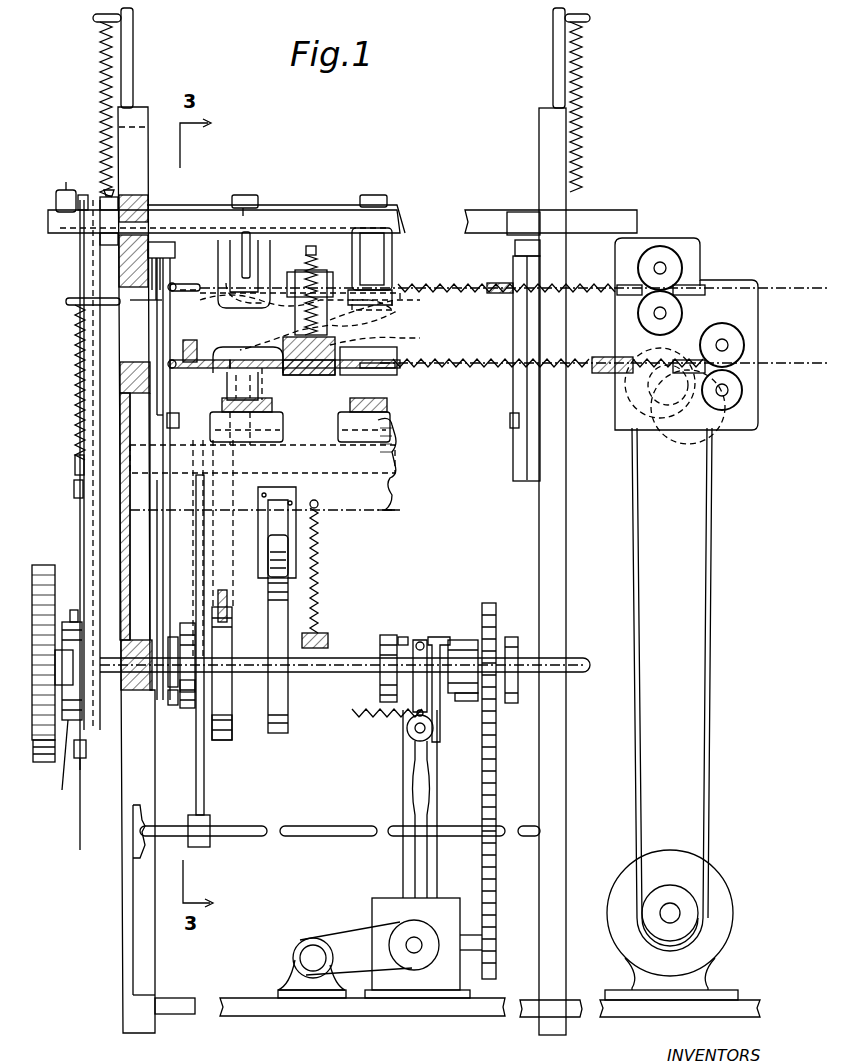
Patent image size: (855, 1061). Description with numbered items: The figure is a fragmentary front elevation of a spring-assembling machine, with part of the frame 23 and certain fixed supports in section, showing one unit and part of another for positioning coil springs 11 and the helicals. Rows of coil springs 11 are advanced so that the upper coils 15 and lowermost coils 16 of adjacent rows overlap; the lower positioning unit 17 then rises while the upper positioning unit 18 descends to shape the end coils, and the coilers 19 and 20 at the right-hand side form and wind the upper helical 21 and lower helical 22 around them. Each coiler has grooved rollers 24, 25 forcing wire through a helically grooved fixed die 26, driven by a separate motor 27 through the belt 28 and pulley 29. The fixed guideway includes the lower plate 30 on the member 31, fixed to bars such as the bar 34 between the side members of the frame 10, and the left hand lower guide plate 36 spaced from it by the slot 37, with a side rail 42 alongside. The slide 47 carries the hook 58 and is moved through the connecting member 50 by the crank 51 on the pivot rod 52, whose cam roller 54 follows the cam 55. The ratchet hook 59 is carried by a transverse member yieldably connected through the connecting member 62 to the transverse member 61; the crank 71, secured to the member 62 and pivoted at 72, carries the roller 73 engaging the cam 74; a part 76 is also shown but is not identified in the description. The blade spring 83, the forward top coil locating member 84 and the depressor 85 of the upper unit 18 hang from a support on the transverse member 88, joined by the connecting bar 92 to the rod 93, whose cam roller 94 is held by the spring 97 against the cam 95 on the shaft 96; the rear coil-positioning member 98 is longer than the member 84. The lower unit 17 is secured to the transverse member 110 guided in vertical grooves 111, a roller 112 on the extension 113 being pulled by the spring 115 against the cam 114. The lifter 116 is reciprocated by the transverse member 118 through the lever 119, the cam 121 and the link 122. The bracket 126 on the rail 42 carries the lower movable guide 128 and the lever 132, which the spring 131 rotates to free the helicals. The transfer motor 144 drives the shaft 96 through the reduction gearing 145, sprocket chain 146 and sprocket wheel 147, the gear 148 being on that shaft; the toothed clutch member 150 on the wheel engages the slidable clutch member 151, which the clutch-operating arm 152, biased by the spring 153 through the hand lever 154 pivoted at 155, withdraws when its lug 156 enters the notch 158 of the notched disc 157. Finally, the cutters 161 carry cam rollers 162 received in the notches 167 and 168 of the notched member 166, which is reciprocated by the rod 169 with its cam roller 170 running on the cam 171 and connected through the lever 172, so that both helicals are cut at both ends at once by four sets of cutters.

The frame 10 is at (116, 960).
The coil springs 11 is at (390, 320).
The upper coils 15 is at (396, 276).
The lowermost coils 16 is at (410, 375).
The lower positioning unit 17 is at (266, 342).
The upper positioning unit 18 is at (276, 268).
The coiler 19 is at (678, 250).
The coiler 20 is at (732, 414).
The upper helical 21 is at (445, 285).
The lower helical 22 is at (460, 368).
The frame 23 is at (136, 1030).
The grooved roller 24 is at (728, 326).
The grooved roller 25 is at (744, 390).
The helically grooved fixed die 26 is at (620, 296).
The motor 27 is at (722, 880).
The belt 28 is at (708, 752).
The pulley 29 is at (652, 436).
The lower plate 30 is at (262, 368).
The member 31 is at (322, 368).
The bar 34 is at (272, 398).
The left hand lower guide plate 36 is at (233, 372).
The slot 37 is at (390, 360).
The side rail 42 is at (330, 345).
The slide 47 is at (385, 400).
The connecting member 50 is at (388, 412).
The crank 51 is at (204, 782).
The pivot rod 52 is at (248, 828).
The cam roller 54 is at (196, 686).
The cam 55 is at (196, 642).
The hook 58 is at (460, 363).
The ratchet hook 59 is at (240, 258).
The transverse member 61 is at (67, 233).
The connecting member 62 is at (66, 189).
The crank 71 is at (80, 528).
The pivot 72 is at (74, 490).
The roller 73 is at (58, 652).
The cam 74 is at (70, 615).
The pin 76 is at (246, 236).
The blade spring 83 is at (392, 244).
The forward top coil locating member 84 is at (262, 290).
The top coil depressor 85 is at (400, 292).
The transversely extending member 88 is at (334, 214).
The connecting bar 92 is at (108, 245).
The rod 93 is at (80, 400).
The cam roller 94 is at (86, 762).
The cam 95 is at (68, 766).
The shaft 96 is at (318, 672).
The spring 97 is at (100, 56).
The rear coil-positioning member 98 is at (189, 340).
The transversely extending member 110 is at (385, 505).
The vertical grooves 111 is at (158, 546).
The roller 112 is at (282, 545).
The extension 113 is at (258, 530).
The cam 114 is at (282, 734).
The spring 115 is at (318, 578).
The lifter 116 is at (250, 456).
The transverse member 118 is at (400, 455).
The lever 119 is at (218, 595).
The cam 121 is at (232, 735).
The link 122 is at (226, 604).
The bracket 126 is at (400, 300).
The lower movable guide 128 is at (418, 332).
The spring 131 is at (322, 280).
The lever 132 is at (330, 278).
The transfer motor 144 is at (303, 944).
The reduction gearing 145 is at (378, 900).
The sprocket chain 146 is at (500, 778).
The sprocket wheel 147 is at (482, 618).
The gear 148 is at (42, 764).
The toothed clutch member 150 is at (460, 642).
The clutch member 151 is at (462, 702).
The clutch-operating arm 152 is at (436, 636).
The spring 153 is at (356, 716).
The hand lever 154 is at (414, 765).
The pivot 155 is at (414, 734).
The lug 156 is at (409, 636).
The notched disc 157 is at (384, 636).
The notch 158 is at (398, 643).
The cutter 161 is at (190, 283).
The cam roller 162 is at (158, 302).
The notched member 166 is at (168, 314).
The notch 167 is at (505, 283).
The notch 168 is at (513, 430).
The rod 169 is at (170, 604).
The cam roller 170 is at (173, 706).
The cam 171 is at (168, 640).
The lever 172 is at (175, 430).